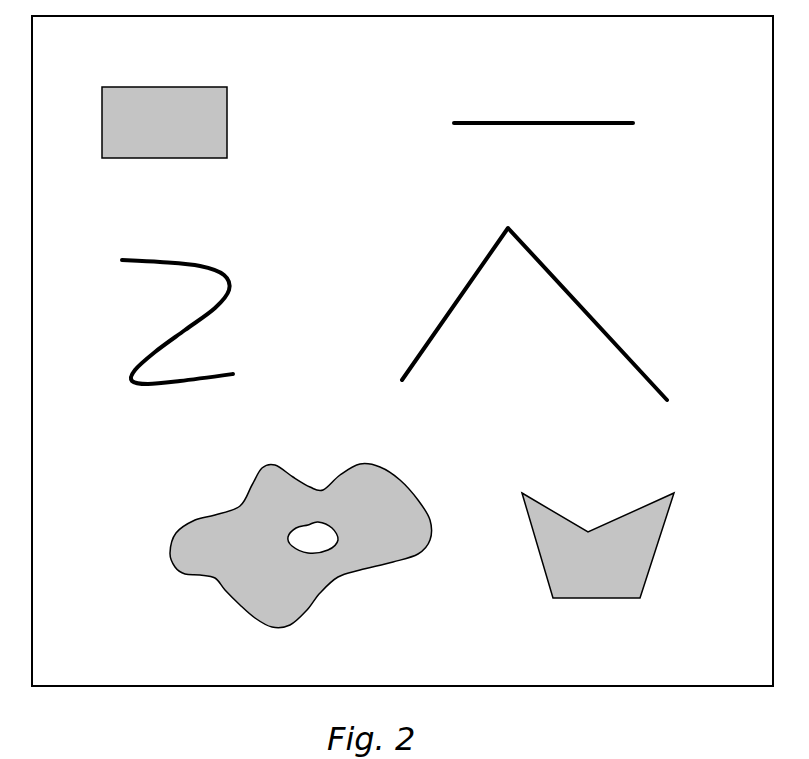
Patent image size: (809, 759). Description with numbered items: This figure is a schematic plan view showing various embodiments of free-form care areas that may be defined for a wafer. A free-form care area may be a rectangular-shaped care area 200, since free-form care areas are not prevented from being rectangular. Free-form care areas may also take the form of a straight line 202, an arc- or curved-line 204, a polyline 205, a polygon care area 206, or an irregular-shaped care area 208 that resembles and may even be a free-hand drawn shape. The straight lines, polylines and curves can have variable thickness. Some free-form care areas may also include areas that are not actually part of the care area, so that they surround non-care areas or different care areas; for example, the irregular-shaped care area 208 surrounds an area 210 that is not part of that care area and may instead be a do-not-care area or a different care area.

The rectangular-shaped care area 200 is at (227, 120).
The straight line care area 202 is at (617, 121).
The arc- or curved-line care area 204 is at (229, 279).
The polyline care area 205 is at (592, 315).
The polygon care area 206 is at (663, 532).
The irregular-shaped care area 208 is at (170, 548).
The area not part of the care area 210 is at (338, 542).